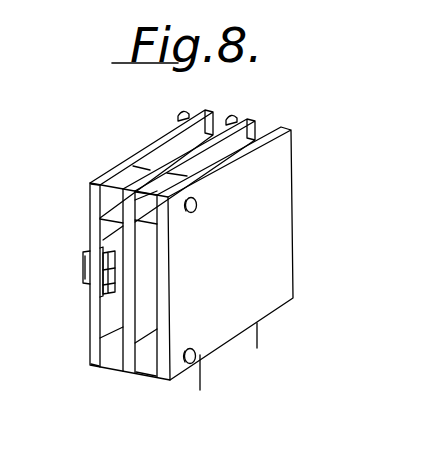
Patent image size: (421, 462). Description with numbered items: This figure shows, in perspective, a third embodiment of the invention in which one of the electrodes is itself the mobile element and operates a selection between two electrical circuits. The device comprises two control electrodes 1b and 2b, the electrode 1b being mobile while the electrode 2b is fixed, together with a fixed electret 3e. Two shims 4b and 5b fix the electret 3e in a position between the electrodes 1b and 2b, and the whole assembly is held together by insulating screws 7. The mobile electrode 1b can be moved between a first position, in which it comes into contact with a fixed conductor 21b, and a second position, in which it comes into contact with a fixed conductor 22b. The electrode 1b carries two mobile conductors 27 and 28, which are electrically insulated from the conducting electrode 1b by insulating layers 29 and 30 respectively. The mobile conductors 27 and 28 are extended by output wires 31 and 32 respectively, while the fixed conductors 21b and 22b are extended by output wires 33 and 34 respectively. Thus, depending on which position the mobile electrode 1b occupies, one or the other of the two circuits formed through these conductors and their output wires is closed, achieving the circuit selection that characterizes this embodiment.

The mobile control electrode 1b is at (180, 143).
The fixed conductor 21b is at (181, 112).
The fixed electret 3e is at (212, 140).
The fixed conductor 22b is at (236, 118).
The fixed control electrode 2b is at (278, 210).
The insulating screws 7 is at (196, 204).
The output wire 33 is at (203, 370).
The output wire 34 is at (260, 331).
The shim 4b is at (113, 197).
The shim 5b is at (148, 212).
The mobile conductor 27 is at (83, 260).
The mobile conductor 28 is at (108, 287).
The insulating layer 29 is at (92, 257).
The insulating layer 30 is at (113, 240).
The output wire 31 is at (107, 274).
The output wire 32 is at (76, 296).